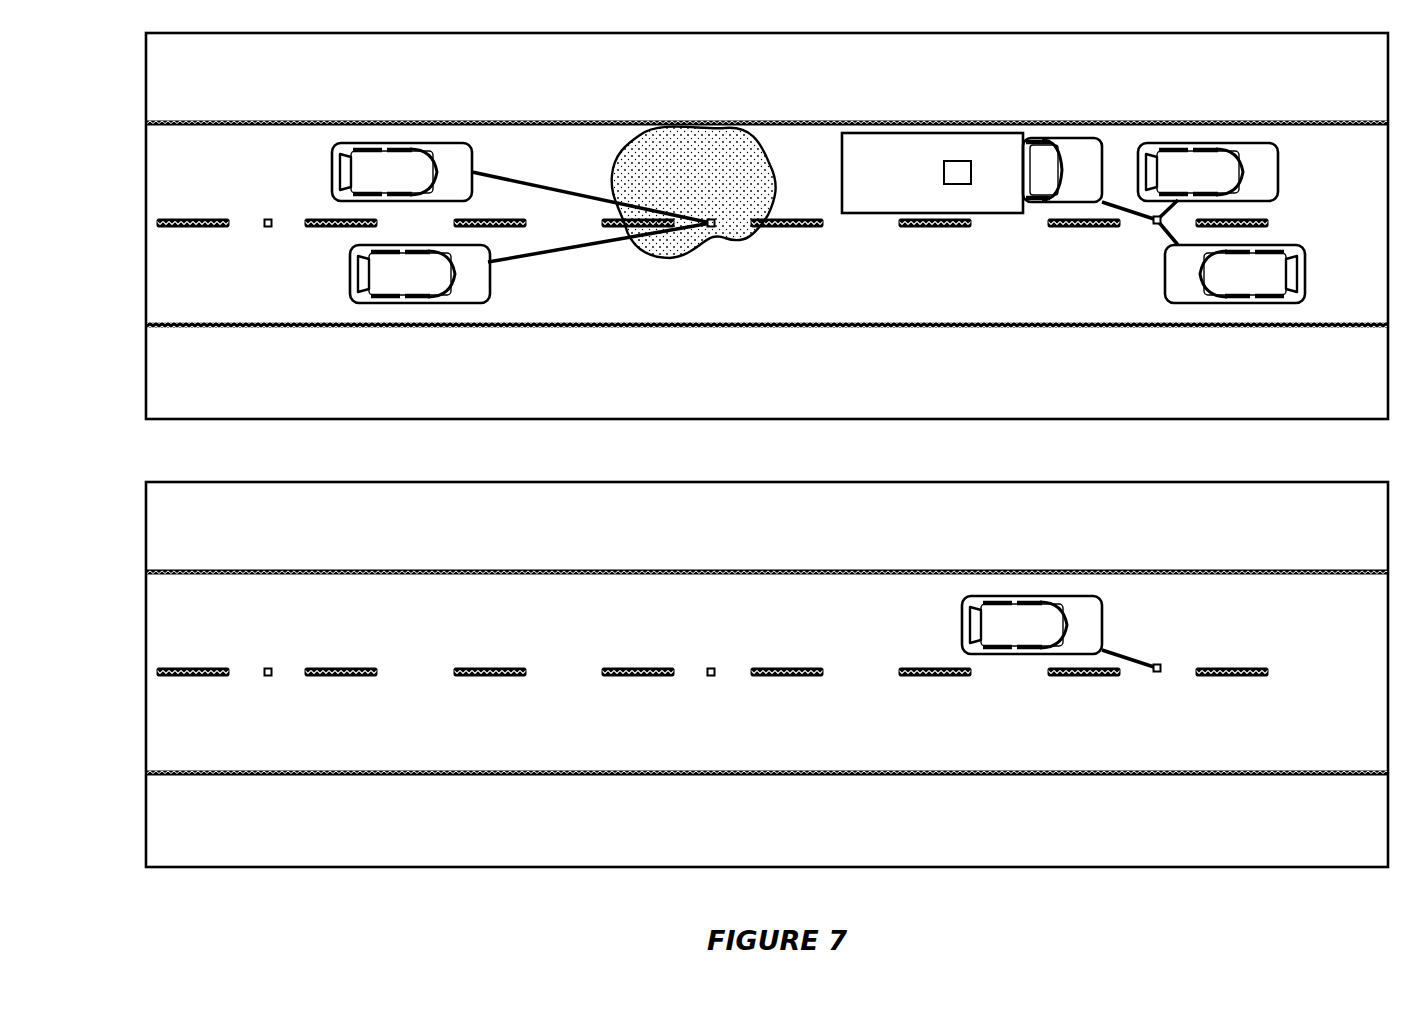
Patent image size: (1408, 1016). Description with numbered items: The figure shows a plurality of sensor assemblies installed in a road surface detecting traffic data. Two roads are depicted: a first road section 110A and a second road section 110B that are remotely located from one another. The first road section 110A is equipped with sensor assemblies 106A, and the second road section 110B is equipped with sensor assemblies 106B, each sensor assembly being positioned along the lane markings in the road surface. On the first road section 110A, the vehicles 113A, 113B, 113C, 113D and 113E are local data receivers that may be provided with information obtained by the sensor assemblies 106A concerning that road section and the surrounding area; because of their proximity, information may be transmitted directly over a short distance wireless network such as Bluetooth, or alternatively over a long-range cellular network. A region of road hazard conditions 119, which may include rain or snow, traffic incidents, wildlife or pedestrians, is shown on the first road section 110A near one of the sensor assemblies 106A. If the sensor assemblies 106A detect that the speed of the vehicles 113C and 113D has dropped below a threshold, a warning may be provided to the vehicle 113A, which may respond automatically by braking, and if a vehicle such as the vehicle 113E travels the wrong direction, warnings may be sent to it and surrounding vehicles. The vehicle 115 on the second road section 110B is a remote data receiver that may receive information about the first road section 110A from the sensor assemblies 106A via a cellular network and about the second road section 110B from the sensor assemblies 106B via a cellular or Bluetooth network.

The first road section 110A is at (173, 270).
The second road section 110B is at (167, 730).
The sensor assemblies 106A is at (270, 218).
The sensor assemblies 106B is at (270, 665).
The vehicle 113A is at (401, 143).
The vehicle 113B is at (383, 303).
The vehicle 113C is at (926, 133).
The vehicle 113D is at (1200, 143).
The vehicle 113E is at (1260, 304).
The road hazard conditions 119 is at (760, 152).
The vehicle 115 is at (1000, 597).